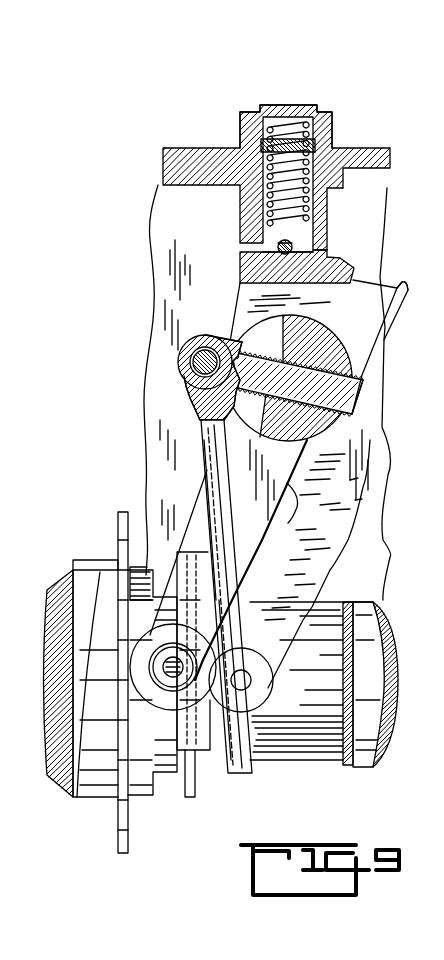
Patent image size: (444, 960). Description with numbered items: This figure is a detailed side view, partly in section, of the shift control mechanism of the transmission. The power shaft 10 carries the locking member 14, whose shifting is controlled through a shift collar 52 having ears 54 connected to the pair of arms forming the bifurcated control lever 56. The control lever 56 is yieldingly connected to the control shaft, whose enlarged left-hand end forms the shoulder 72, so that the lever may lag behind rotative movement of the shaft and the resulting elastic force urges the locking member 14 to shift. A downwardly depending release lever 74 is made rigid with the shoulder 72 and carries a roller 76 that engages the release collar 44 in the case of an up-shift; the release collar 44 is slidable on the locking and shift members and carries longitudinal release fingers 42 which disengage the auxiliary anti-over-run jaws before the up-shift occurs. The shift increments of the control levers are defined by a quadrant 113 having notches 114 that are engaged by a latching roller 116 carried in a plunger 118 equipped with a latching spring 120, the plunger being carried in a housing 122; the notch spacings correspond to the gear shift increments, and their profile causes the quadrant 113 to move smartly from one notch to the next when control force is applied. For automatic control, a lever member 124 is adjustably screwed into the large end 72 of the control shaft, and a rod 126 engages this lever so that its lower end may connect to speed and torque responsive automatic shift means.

The power shaft 10 is at (318, 750).
The locking member 14 is at (50, 575).
The release fingers 42 is at (420, 302).
The release collar 44 is at (128, 838).
The shift collar 52 is at (210, 768).
The ears 54 is at (268, 688).
The control lever 56 is at (330, 568).
The shoulder 72 is at (322, 337).
The release lever 74 is at (196, 517).
The roller 76 is at (172, 694).
The quadrant 113 is at (385, 335).
The notches 114 is at (338, 262).
The latching roller 116 is at (278, 248).
The plunger 118 is at (268, 200).
The latching spring 120 is at (318, 140).
The housing 122 is at (250, 112).
The lever member 124 is at (350, 393).
The rod 126 is at (204, 437).